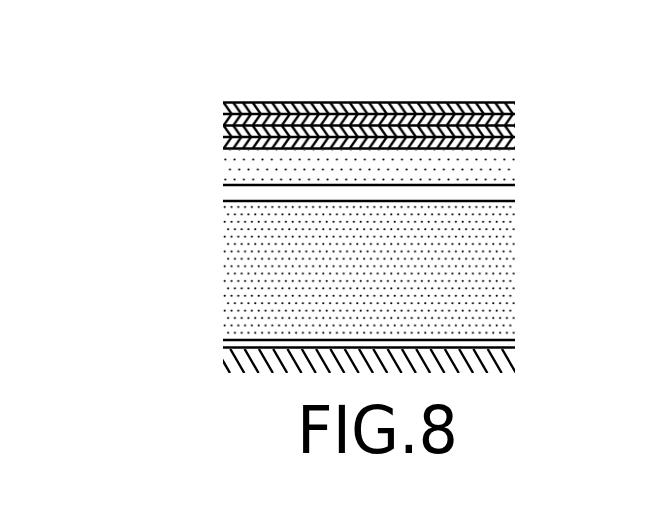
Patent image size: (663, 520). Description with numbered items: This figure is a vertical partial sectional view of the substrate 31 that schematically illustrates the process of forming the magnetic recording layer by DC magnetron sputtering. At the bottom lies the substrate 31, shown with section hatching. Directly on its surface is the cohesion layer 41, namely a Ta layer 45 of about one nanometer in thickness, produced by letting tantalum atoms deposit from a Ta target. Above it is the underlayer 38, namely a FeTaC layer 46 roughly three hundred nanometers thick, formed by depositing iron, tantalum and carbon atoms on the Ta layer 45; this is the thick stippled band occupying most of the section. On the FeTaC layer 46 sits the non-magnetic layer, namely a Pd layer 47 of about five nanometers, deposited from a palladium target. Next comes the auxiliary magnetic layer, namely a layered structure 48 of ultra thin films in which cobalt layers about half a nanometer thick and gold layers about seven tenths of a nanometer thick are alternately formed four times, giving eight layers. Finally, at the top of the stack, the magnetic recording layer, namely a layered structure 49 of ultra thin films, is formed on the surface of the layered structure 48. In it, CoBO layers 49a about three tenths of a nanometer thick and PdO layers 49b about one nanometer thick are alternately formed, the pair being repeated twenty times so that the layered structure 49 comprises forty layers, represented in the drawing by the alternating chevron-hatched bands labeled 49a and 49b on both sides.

The substrate 31 is at (507, 350).
The Ta layer 45 is at (294, 329).
The cohesion layer 41 is at (235, 341).
The FeTaC layer 46 is at (294, 265).
The underlayer 38 is at (235, 204).
The Pd layer 47 is at (294, 172).
The layered structure 48 is at (512, 147).
The layered structure 49 is at (364, 74).
The CoBO layer 49a is at (228, 114).
The PdO layer 49b is at (228, 108).